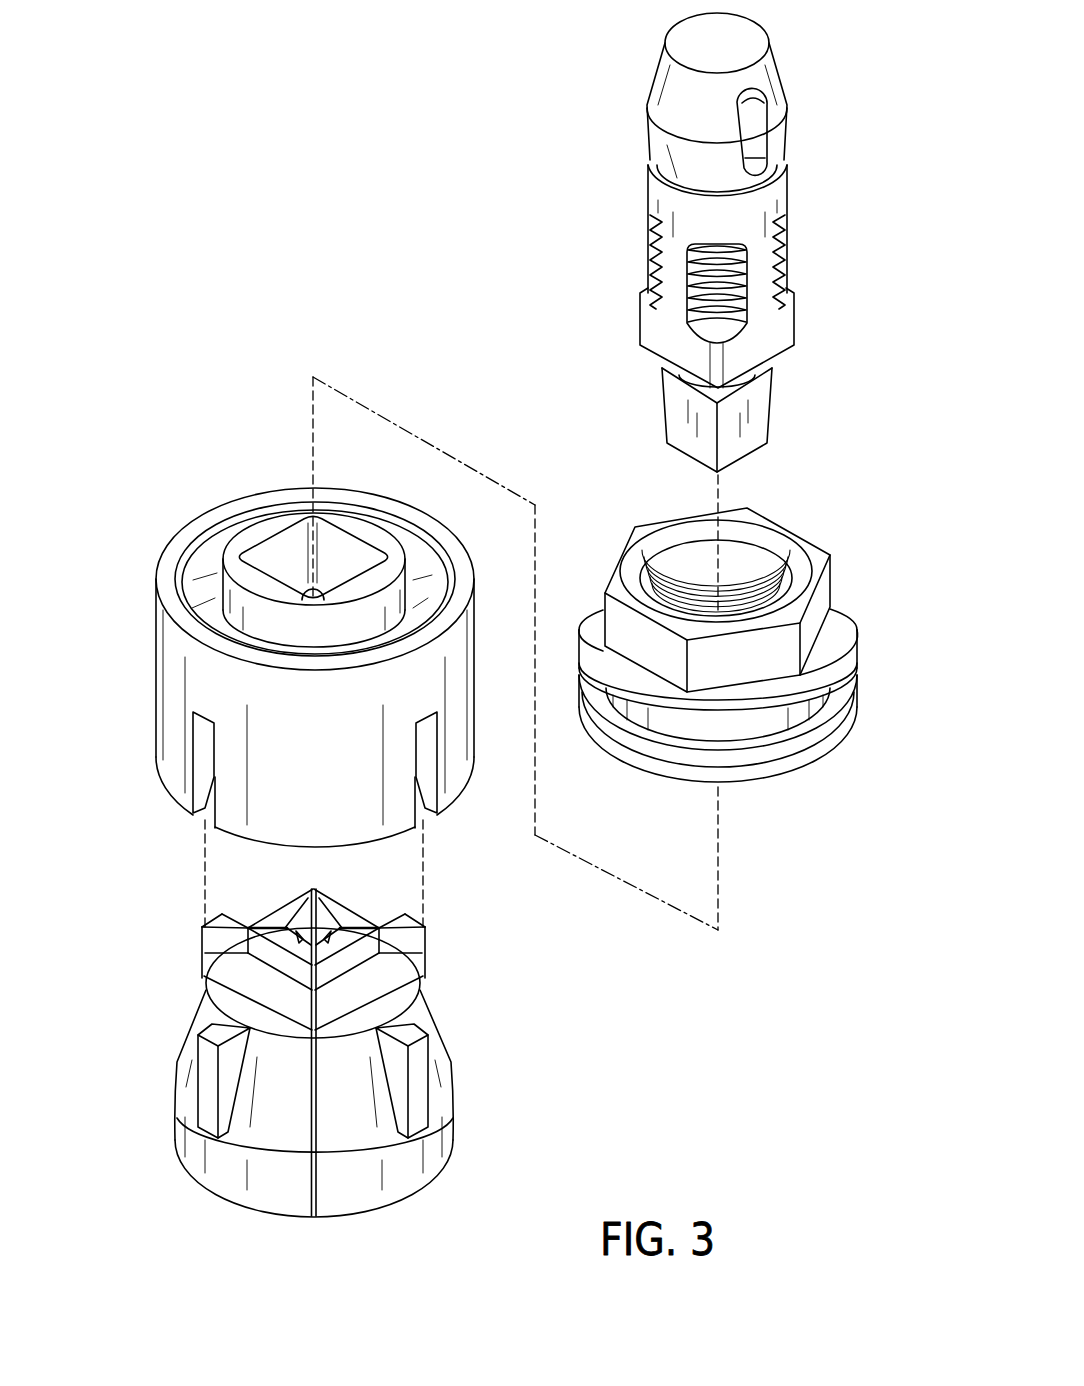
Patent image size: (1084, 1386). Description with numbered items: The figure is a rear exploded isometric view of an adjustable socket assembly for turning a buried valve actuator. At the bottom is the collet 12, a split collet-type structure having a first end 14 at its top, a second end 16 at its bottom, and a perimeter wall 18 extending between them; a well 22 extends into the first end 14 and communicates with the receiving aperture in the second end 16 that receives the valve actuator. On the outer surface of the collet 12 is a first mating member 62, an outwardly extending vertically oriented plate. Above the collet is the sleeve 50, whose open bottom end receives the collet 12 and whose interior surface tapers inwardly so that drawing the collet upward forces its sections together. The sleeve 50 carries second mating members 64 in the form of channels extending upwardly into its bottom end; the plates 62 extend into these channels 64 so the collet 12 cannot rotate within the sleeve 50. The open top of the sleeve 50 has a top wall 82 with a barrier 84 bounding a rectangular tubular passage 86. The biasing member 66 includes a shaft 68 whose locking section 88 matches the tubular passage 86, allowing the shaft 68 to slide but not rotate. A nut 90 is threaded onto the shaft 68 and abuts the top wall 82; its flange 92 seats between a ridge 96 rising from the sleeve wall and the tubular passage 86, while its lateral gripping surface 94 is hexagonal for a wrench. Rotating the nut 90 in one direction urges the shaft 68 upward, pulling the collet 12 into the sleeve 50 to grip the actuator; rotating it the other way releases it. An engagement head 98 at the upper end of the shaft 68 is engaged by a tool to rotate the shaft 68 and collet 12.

The collet 12 is at (113, 1043).
The first end 14 is at (338, 915).
The second end 16 is at (402, 1190).
The perimeter wall 18 is at (452, 1082).
The well 22 is at (284, 899).
The sleeve 50 is at (107, 668).
The first mating member 62 is at (208, 1085).
The second mating member 64 is at (174, 762).
The biasing member 66 is at (836, 507).
The shaft 68 is at (640, 350).
The top wall 82 is at (425, 585).
The barrier 84 is at (400, 550).
The tubular passage 86 is at (287, 514).
The locking section 88 is at (792, 323).
The nut 90 is at (908, 697).
The flange 92 is at (835, 745).
The lateral gripping surface 94 is at (815, 617).
The ridge 96 is at (212, 548).
The engagement head 98 is at (852, 94).